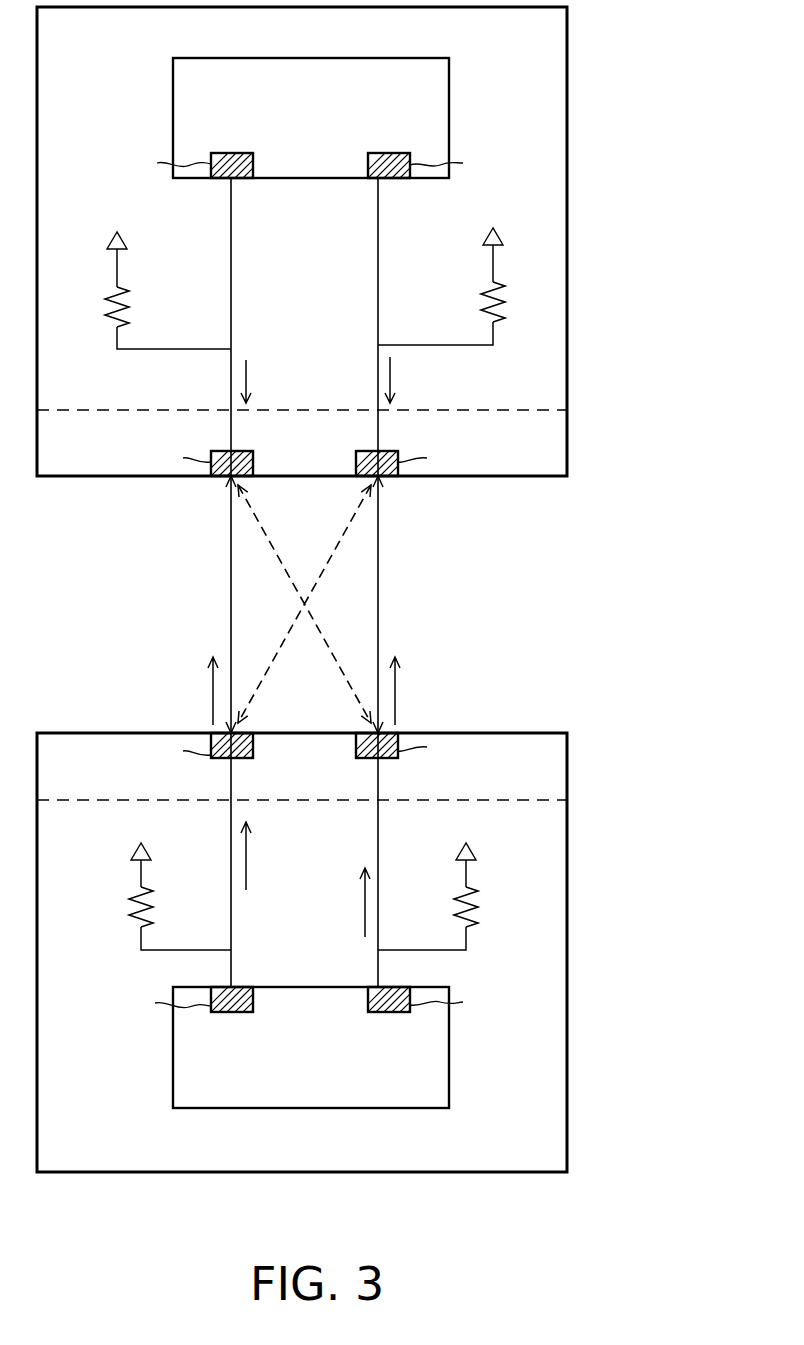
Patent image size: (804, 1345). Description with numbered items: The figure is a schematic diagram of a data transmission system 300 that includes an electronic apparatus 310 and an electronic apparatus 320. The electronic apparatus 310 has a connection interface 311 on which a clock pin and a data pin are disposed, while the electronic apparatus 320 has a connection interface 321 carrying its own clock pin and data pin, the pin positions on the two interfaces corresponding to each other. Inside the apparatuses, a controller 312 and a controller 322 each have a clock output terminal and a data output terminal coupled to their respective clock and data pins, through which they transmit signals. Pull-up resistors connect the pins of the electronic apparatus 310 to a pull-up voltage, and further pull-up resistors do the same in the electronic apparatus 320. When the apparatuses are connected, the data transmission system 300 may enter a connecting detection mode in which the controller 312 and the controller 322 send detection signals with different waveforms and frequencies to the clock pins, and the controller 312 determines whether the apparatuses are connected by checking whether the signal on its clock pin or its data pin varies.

The data transmission system 300 is at (364, 597).
The electronic apparatus 310 is at (596, 1037).
The connection interface 311 is at (596, 758).
The controller 312 is at (479, 1079).
The electronic apparatus 320 is at (596, 218).
The connection interface 321 is at (596, 451).
The controller 322 is at (479, 87).